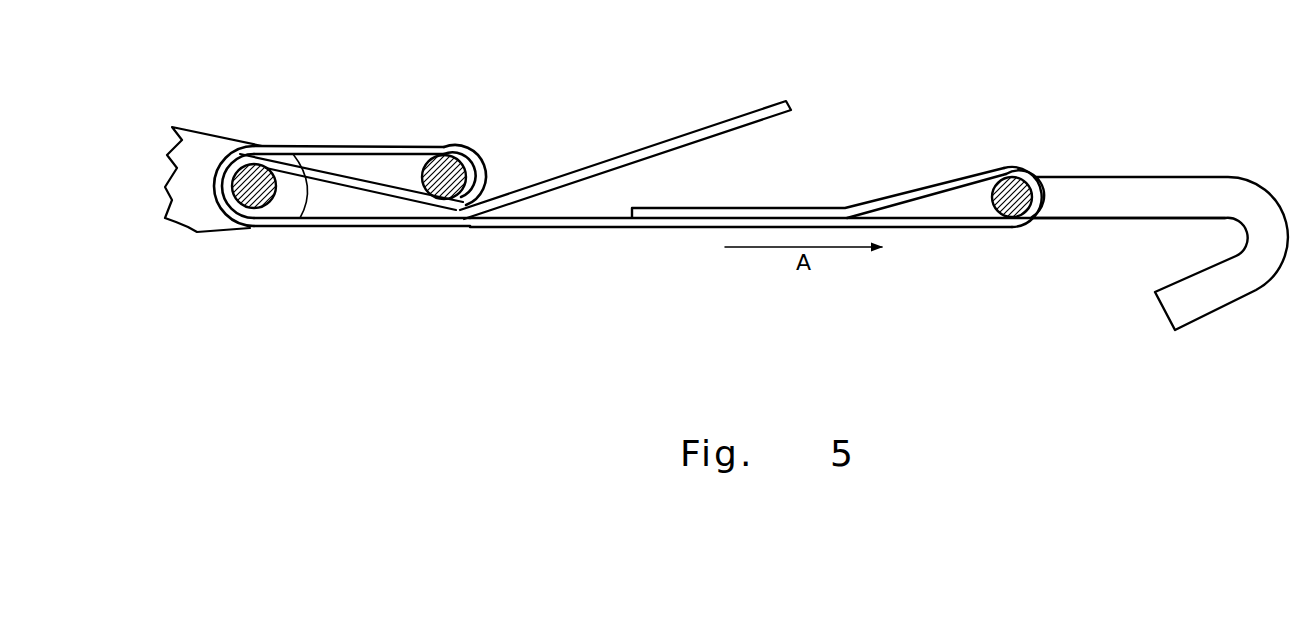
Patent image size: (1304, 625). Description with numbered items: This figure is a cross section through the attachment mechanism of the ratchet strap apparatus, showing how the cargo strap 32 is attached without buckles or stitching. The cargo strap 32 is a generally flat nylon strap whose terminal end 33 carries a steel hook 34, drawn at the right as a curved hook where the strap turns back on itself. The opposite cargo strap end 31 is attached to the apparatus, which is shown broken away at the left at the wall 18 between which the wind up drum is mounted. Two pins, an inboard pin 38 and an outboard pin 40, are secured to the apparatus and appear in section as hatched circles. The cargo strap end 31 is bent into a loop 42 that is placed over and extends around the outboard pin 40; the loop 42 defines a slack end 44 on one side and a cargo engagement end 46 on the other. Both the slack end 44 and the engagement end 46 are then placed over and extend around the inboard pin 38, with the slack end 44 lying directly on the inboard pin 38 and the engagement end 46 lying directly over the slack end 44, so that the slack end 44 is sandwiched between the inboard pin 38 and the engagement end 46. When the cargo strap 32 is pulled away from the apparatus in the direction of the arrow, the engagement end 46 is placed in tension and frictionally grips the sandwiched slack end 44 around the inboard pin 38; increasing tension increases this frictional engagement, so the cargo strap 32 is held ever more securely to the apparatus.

The wall 18 is at (187, 203).
The cargo strap end 31 is at (471, 253).
The cargo strap 32 is at (604, 228).
The terminal end 33 is at (953, 168).
The steel hook 34 is at (1222, 182).
The inboard pin 38 is at (253, 177).
The outboard pin 40 is at (445, 160).
The loop 42 is at (484, 159).
The slack end 44 is at (360, 160).
The cargo engagement end 46 is at (316, 138).